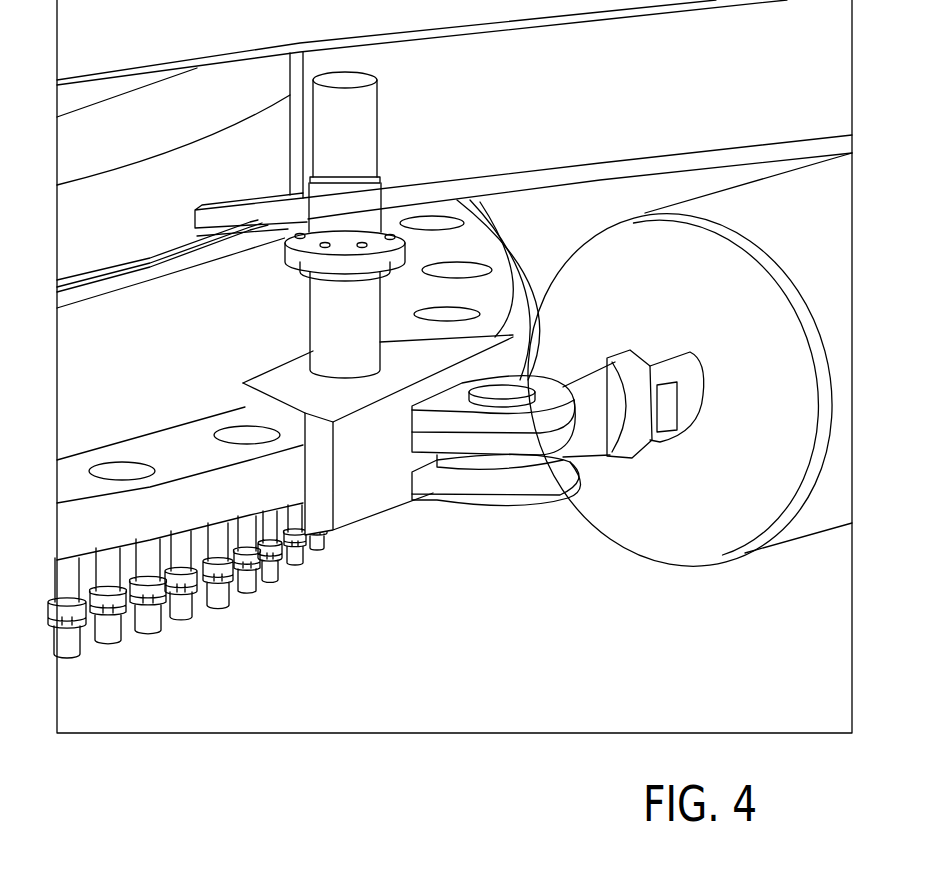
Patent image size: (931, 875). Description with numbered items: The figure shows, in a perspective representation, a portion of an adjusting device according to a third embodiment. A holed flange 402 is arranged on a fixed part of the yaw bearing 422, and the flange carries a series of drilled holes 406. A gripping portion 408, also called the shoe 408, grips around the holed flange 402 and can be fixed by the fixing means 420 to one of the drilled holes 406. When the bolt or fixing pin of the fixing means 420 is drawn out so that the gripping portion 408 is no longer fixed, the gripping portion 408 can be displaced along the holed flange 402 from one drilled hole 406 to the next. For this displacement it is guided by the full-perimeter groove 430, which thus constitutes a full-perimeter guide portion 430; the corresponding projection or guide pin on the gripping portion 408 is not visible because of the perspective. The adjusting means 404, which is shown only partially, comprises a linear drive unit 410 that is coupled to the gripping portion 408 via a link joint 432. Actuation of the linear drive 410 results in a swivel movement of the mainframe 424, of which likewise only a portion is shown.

The holed flange 402 is at (223, 503).
The adjusting means 404 is at (792, 563).
The drilled hole 406 is at (237, 428).
The gripping portion 408 is at (368, 488).
The linear drive unit 410 is at (638, 532).
The fixing means 420 is at (365, 331).
The yaw bearing 422 is at (117, 362).
The mainframe 424 is at (593, 108).
The full-perimeter groove 430 is at (515, 265).
The link joint 432 is at (505, 490).